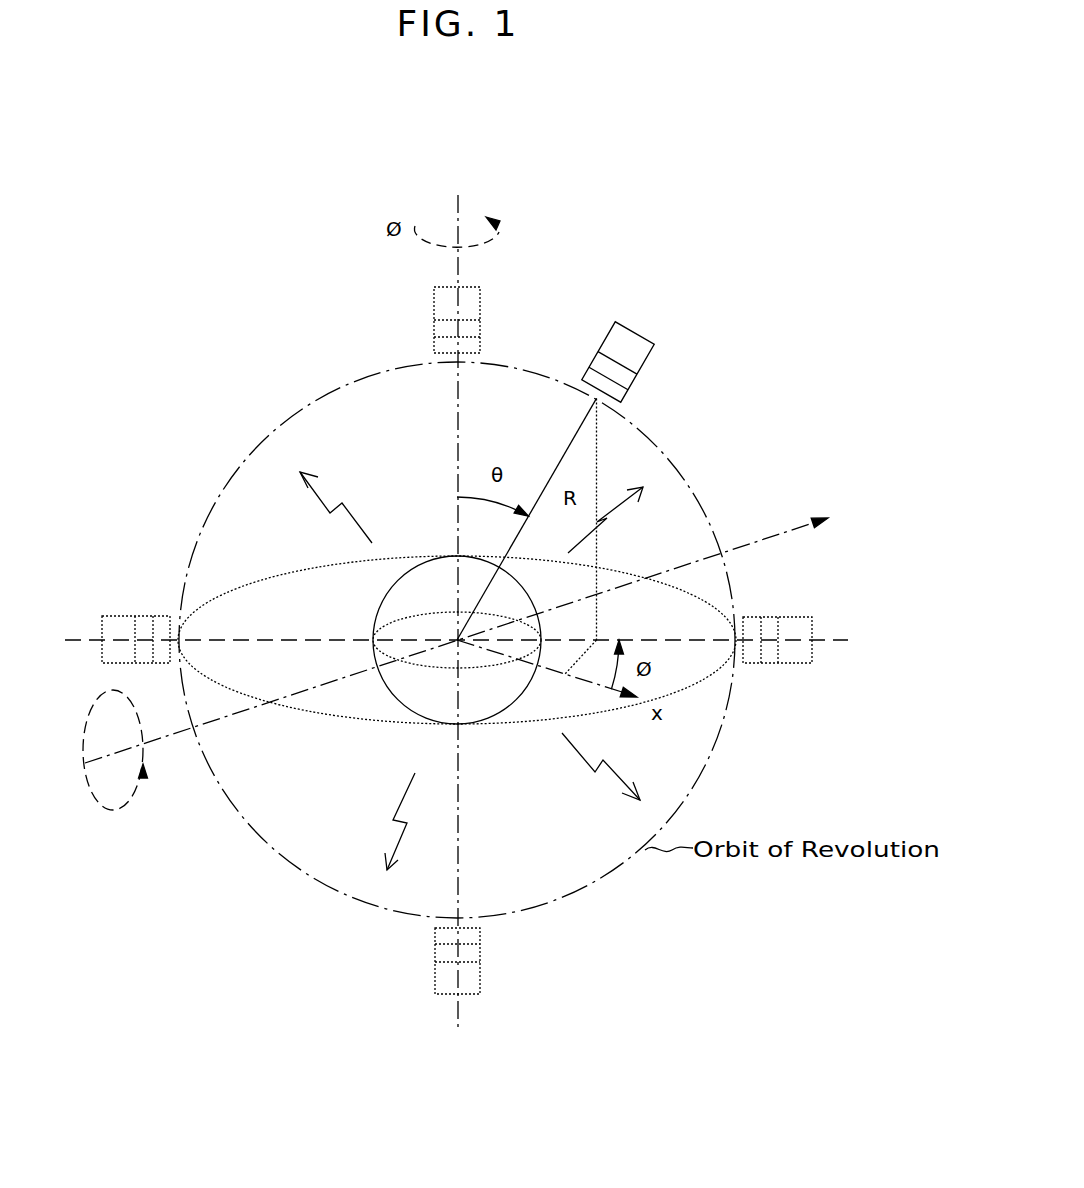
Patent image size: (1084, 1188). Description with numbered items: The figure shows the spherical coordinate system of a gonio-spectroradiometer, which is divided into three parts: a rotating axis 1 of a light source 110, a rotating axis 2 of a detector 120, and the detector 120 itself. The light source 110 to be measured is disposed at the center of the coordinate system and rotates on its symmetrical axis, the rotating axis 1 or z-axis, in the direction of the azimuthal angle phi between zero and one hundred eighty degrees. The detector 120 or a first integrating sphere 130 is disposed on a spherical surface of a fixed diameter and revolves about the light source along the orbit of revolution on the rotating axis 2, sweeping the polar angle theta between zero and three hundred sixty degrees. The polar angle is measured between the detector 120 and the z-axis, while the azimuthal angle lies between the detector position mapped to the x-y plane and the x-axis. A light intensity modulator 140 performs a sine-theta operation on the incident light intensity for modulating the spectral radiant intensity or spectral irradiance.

The rotating axis of the light source 1 is at (460, 1016).
The rotating axis of the detector 2 is at (157, 742).
The light source 110 is at (374, 609).
The detector 120 is at (637, 334).
The first integrating sphere 130 is at (628, 399).
The light intensity modulator 140 is at (639, 380).